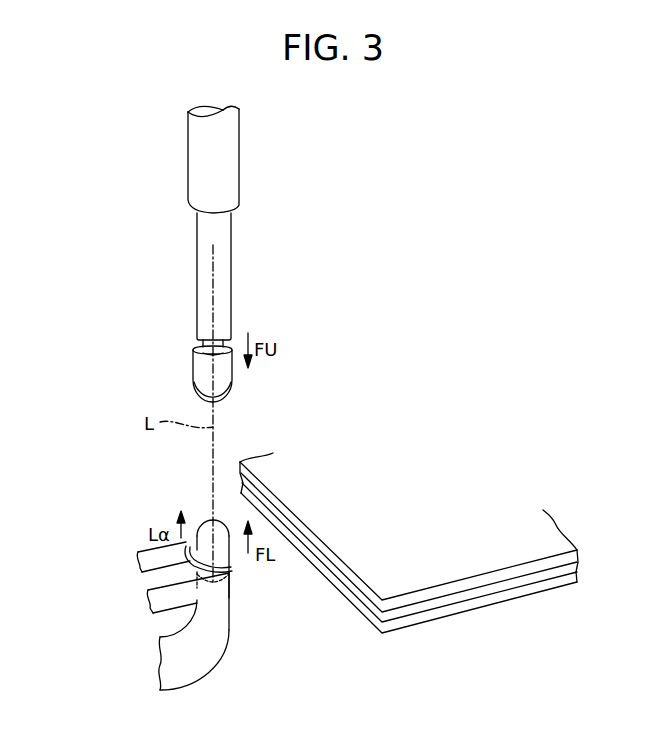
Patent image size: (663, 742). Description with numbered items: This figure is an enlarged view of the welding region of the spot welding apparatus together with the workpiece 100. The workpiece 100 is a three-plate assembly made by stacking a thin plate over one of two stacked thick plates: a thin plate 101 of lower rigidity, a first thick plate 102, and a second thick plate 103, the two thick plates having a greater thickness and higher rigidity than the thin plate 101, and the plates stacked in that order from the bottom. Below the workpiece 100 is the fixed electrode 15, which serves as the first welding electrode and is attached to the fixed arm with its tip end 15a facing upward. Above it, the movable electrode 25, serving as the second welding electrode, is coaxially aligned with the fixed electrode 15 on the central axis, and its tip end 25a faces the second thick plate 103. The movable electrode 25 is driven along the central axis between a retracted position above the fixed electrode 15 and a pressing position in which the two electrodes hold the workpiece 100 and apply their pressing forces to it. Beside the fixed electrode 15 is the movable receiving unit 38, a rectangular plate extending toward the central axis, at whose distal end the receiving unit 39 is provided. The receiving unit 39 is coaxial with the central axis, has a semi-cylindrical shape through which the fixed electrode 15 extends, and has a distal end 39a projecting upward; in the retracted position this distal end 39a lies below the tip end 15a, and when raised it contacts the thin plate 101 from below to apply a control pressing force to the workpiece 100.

The fixed electrode 15 is at (219, 569).
The tip end 15a is at (213, 519).
The movable electrode 25 is at (202, 362).
The tip end 25a is at (208, 399).
The movable receiving unit 38 is at (155, 601).
The receiving unit 39 is at (142, 570).
The distal end 39a is at (193, 545).
The workpiece 100 is at (409, 582).
The thin plate 101 is at (442, 672).
The first thick plate 102 is at (498, 591).
The second thick plate 103 is at (456, 590).